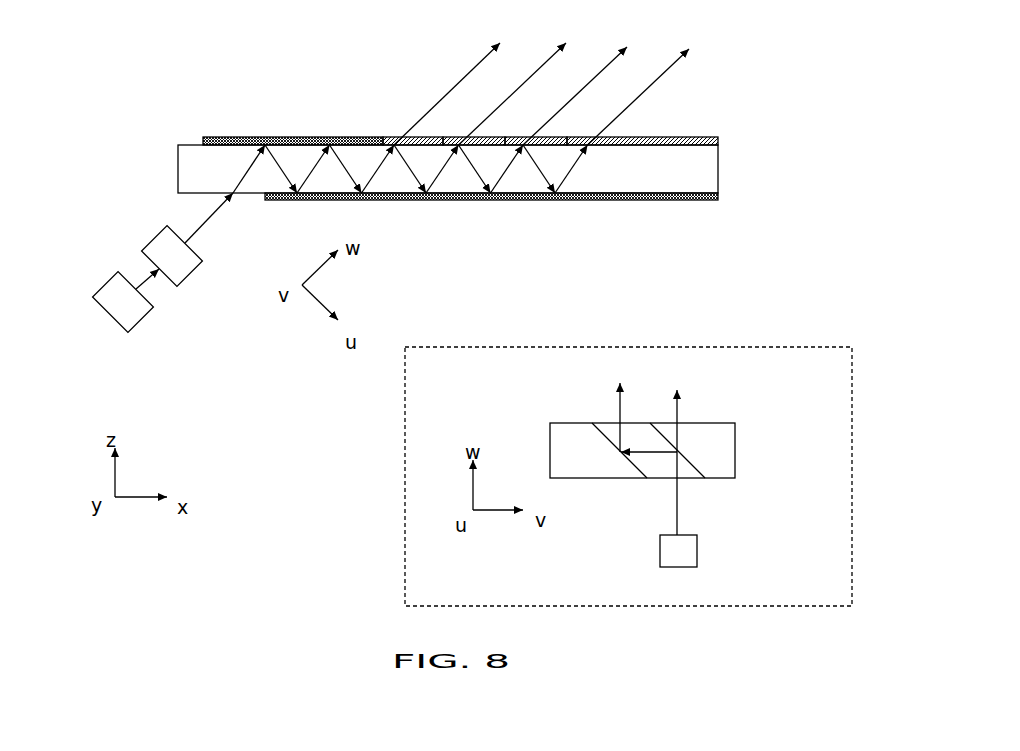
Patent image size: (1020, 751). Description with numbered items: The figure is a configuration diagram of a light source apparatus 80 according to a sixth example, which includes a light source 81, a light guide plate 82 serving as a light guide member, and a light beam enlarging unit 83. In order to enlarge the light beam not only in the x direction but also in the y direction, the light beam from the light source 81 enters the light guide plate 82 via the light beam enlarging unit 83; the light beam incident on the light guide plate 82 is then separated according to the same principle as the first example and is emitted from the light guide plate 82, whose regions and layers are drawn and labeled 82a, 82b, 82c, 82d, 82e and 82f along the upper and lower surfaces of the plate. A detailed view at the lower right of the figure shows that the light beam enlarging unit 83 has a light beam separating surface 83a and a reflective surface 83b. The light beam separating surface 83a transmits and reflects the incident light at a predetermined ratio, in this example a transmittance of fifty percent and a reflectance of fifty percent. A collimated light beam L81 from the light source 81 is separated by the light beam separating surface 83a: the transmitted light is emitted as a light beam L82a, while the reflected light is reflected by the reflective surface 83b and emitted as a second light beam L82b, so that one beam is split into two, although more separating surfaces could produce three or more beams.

The light source apparatus 80 is at (854, 35).
The light source 81 is at (135, 325).
The light guide plate 82 is at (178, 178).
The first emission region 82a is at (400, 126).
The second emission region 82b is at (440, 137).
The third emission region 82c is at (528, 125).
The top surface layer 82d is at (678, 137).
The bottom reflective layer 82e is at (688, 200).
The incidence region layer 82f is at (253, 137).
The light beam enlarging unit 83 is at (192, 272).
The light beam separating surface 83a is at (716, 452).
The reflective surface 83b is at (606, 433).
The collimated light beam L81 is at (702, 493).
The light beam L82a is at (709, 416).
The light beam L82b is at (619, 415).